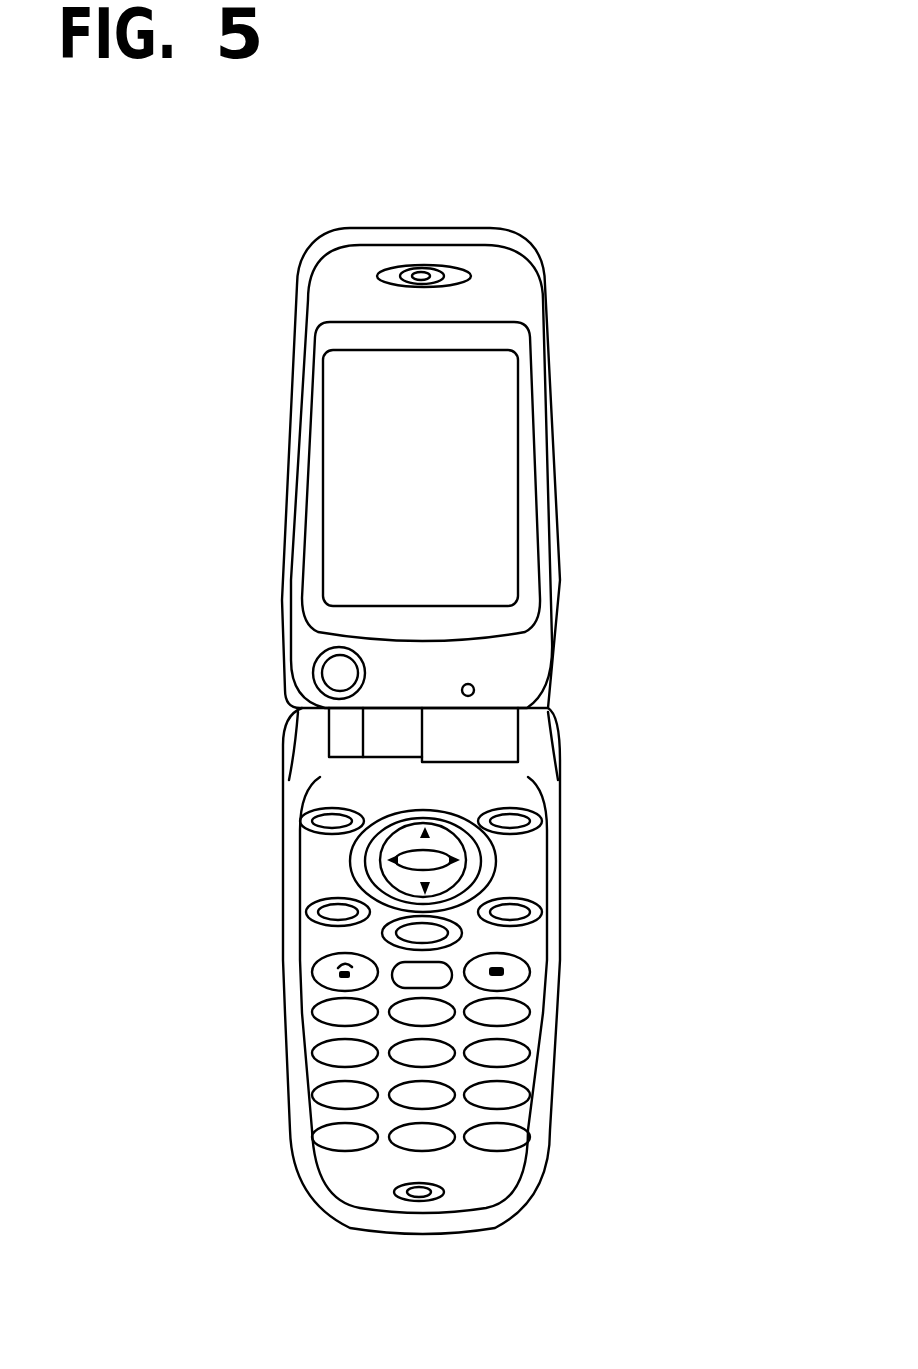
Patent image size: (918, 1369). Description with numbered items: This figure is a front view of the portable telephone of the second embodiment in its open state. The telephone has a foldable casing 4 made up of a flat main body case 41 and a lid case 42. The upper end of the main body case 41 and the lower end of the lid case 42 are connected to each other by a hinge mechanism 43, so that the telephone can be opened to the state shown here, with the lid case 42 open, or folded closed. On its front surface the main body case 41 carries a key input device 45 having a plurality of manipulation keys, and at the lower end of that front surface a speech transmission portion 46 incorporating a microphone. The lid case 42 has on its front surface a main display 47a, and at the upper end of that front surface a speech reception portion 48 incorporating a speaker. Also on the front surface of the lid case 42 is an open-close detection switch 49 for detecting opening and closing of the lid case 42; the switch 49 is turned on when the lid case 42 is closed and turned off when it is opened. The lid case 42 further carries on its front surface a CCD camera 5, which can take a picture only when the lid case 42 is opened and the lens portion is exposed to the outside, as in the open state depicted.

The casing 4 is at (192, 660).
The main body case 41 is at (293, 787).
The lid case 42 is at (283, 658).
The hinge mechanism 43 is at (495, 743).
The key input device 45 is at (518, 1013).
The speech transmission portion 46 is at (435, 1198).
The main display 47a is at (492, 523).
The speech reception portion 48 is at (422, 270).
The open-close detection switch 49 is at (474, 689).
The CCD camera 5 is at (333, 653).